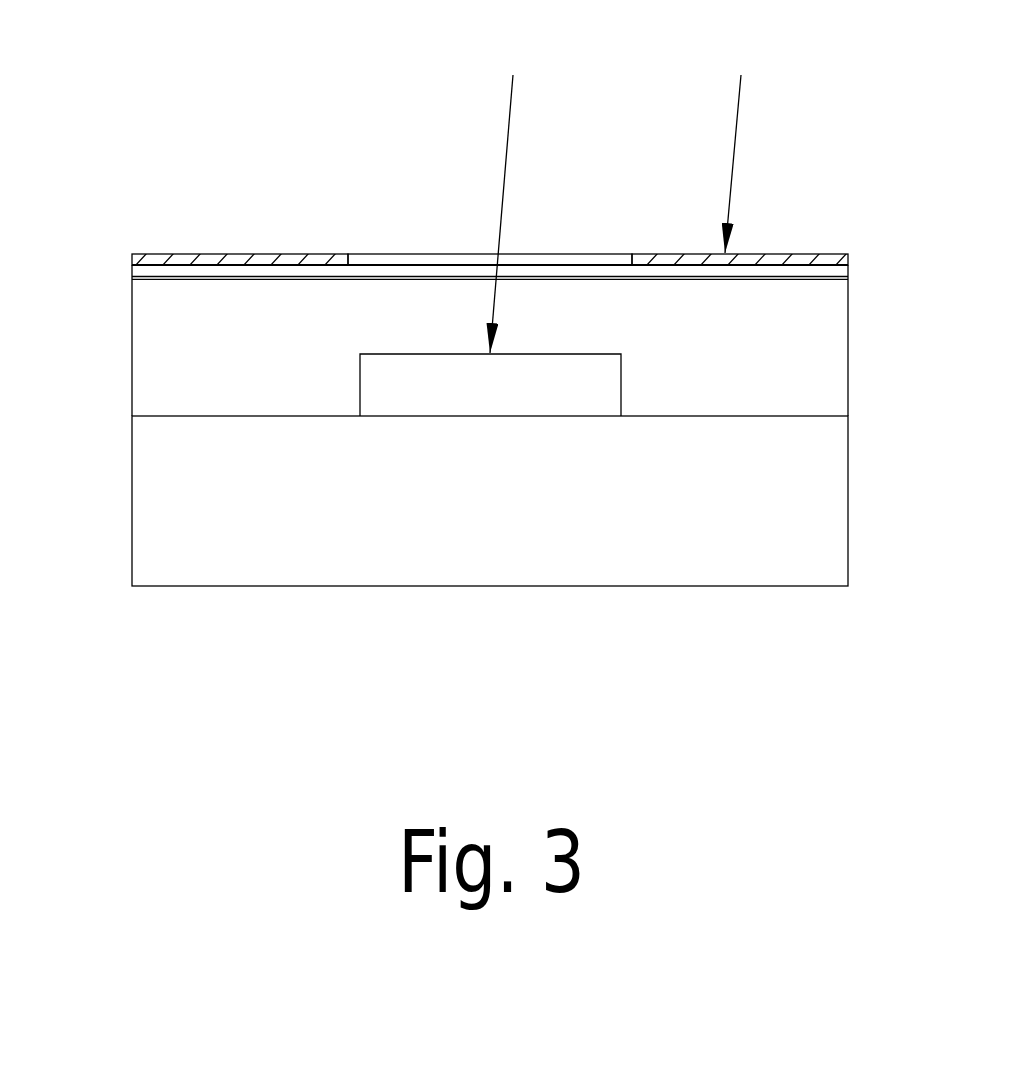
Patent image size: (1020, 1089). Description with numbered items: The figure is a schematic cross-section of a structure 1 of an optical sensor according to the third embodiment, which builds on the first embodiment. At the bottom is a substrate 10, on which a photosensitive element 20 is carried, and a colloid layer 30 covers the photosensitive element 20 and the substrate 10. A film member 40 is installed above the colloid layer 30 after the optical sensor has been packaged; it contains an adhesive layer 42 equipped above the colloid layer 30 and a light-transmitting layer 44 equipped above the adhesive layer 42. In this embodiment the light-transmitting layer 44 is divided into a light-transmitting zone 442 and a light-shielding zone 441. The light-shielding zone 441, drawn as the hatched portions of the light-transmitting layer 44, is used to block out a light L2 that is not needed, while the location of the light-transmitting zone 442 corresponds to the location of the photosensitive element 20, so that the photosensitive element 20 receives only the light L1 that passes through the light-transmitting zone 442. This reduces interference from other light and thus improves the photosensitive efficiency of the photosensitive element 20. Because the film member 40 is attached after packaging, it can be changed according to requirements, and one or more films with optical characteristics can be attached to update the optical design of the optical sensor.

The structure of optical sensor 1 is at (876, 30).
The substrate 10 is at (178, 588).
The photosensitive element 20 is at (360, 385).
The colloid layer 30 is at (132, 348).
The film member 40 is at (129, 207).
The adhesive layer 42 is at (132, 272).
The light-transmitting layer 44 is at (310, 202).
The light-shielding zone 441 is at (233, 255).
The light-transmitting zone 442 is at (430, 255).
The light L1 is at (512, 108).
The light L2 is at (740, 108).